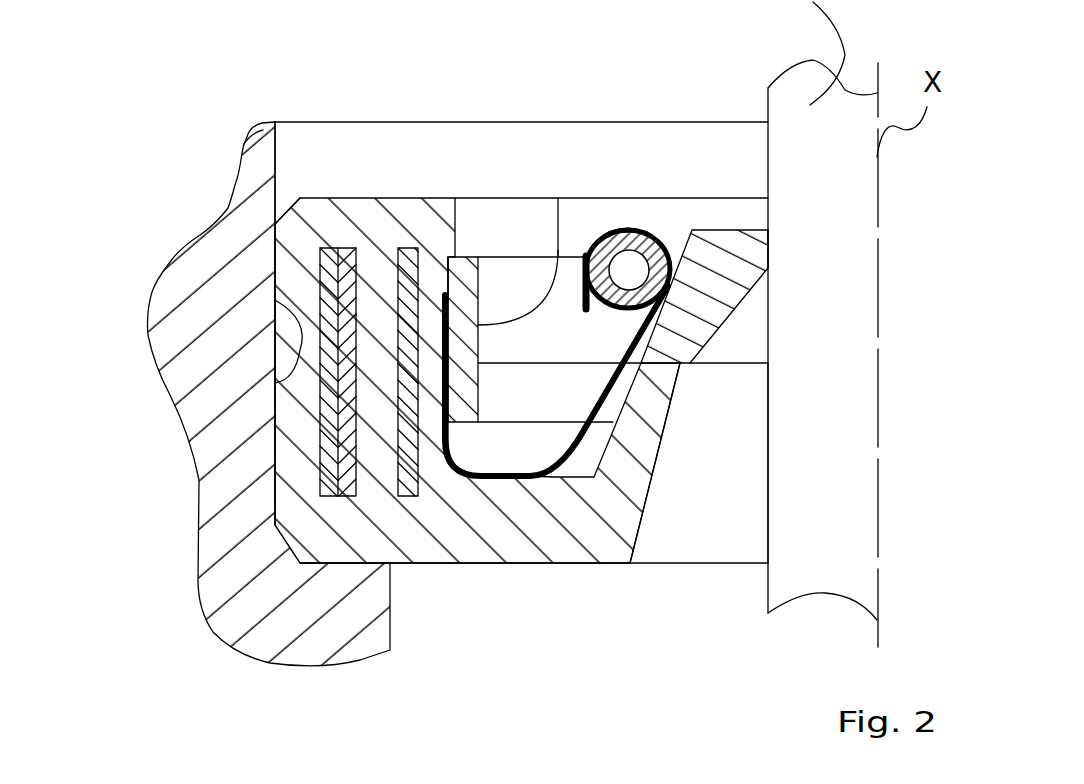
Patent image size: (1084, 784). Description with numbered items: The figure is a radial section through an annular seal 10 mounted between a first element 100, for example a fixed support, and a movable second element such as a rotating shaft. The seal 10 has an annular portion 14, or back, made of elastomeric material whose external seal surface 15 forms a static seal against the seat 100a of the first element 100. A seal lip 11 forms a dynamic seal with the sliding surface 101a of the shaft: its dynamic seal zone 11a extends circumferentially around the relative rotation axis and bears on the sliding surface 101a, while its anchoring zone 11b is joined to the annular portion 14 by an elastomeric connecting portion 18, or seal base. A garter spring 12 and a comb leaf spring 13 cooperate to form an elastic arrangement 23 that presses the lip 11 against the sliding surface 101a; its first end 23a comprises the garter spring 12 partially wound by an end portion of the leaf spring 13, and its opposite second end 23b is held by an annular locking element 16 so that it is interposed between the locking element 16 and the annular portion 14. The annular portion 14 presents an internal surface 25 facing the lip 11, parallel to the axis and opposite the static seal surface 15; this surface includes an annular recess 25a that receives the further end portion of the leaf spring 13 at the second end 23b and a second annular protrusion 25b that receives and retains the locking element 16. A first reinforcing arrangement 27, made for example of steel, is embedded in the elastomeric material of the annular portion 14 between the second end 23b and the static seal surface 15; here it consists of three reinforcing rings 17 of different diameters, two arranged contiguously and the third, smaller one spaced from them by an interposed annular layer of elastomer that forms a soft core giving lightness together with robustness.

The annular seal 10 is at (190, 35).
The seal lip 11 is at (753, 342).
The dynamic seal zone 11a is at (767, 257).
The anchoring zone 11b is at (612, 513).
The garter spring 12 is at (673, 277).
The leaf spring 13 is at (552, 467).
The annular portion 14 is at (342, 174).
The seal surface 15 is at (277, 303).
The annular locking element 16 is at (680, 368).
The reinforcing rings 17 is at (403, 253).
The connecting portion 18 is at (513, 537).
The elastic arrangement 23 is at (655, 199).
The first end 23a is at (610, 228).
The second end 23b is at (445, 388).
The internal surface 25 is at (450, 247).
The annular recess 25a is at (558, 200).
The second annular protrusion 25b is at (448, 215).
The first reinforcing arrangement 27 is at (282, 250).
The first element 100 is at (223, 433).
The seat 100a is at (278, 292).
The sliding surface 101a is at (767, 448).